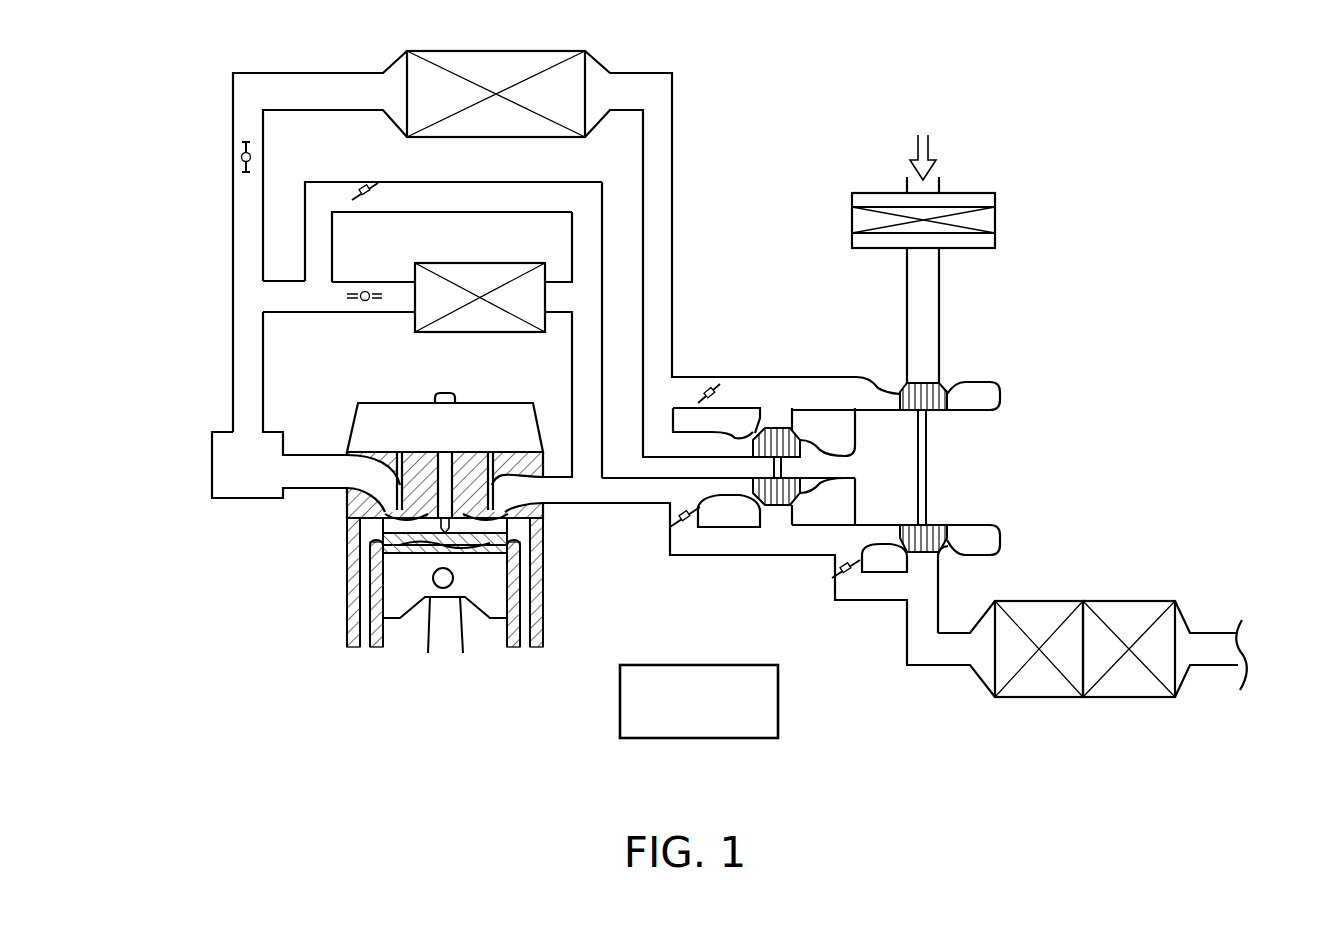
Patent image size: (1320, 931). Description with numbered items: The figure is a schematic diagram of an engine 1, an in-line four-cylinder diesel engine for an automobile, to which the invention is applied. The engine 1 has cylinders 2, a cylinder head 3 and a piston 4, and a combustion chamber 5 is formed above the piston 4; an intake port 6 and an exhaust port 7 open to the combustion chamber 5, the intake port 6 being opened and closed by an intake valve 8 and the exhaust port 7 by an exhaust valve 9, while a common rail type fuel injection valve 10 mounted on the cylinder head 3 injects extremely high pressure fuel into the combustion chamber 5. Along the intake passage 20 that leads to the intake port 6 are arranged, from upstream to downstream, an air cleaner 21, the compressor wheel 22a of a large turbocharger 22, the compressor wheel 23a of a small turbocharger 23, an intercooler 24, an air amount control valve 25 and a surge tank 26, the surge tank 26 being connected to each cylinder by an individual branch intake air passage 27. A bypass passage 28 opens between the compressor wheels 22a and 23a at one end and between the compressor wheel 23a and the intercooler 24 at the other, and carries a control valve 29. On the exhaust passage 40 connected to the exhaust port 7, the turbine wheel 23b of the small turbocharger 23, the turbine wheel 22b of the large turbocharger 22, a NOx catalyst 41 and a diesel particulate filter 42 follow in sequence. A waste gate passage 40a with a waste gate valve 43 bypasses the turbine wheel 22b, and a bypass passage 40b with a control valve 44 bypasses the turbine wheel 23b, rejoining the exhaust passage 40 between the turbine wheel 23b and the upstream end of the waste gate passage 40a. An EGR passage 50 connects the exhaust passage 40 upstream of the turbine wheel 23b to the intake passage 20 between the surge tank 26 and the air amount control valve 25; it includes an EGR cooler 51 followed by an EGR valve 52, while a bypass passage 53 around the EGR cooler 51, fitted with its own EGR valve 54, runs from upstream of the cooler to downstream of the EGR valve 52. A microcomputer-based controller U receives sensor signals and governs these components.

The engine 1 is at (455, 525).
The cylinder 2 is at (540, 615).
The cylinder head 3 is at (352, 520).
The piston 4 is at (455, 620).
The combustion chamber 5 is at (510, 553).
The intake port 6 is at (345, 478).
The exhaust port 7 is at (535, 492).
The intake valve 8 is at (340, 505).
The exhaust valve 9 is at (505, 470).
The fuel injection valve 10 is at (440, 480).
The intake passage 20 is at (939, 285).
The air cleaner 21 is at (995, 220).
The large turbocharger 22 is at (915, 447).
The compressor wheel of large turbocharger 22a is at (950, 390).
The turbine wheel of large turbocharger 22b is at (952, 525).
The small turbocharger 23 is at (823, 472).
The compressor wheel of small turbocharger 23a is at (778, 428).
The turbine wheel of small turbocharger 23b is at (778, 505).
The intercooler 24 is at (515, 51).
The air amount control valve 25 is at (238, 150).
The surge tank 26 is at (212, 465).
The branch intake air passage 27 is at (298, 455).
The bypass passage 28 is at (735, 408).
The control valve 29 is at (700, 395).
The exhaust passage 40 is at (940, 665).
The waste gate passage 40a is at (875, 595).
The bypass passage 40b is at (703, 540).
The NOx catalyst 41 is at (1025, 690).
The diesel particulate filter 42 is at (1118, 690).
The waste gate valve 43 is at (840, 590).
The control valve 44 is at (672, 527).
The EGR passage 50 is at (602, 362).
The EGR cooler 51 is at (483, 263).
The EGR valve 52 is at (368, 292).
The bypass passage 53 is at (470, 182).
The EGR valve 54 is at (365, 188).
The controller U is at (620, 703).